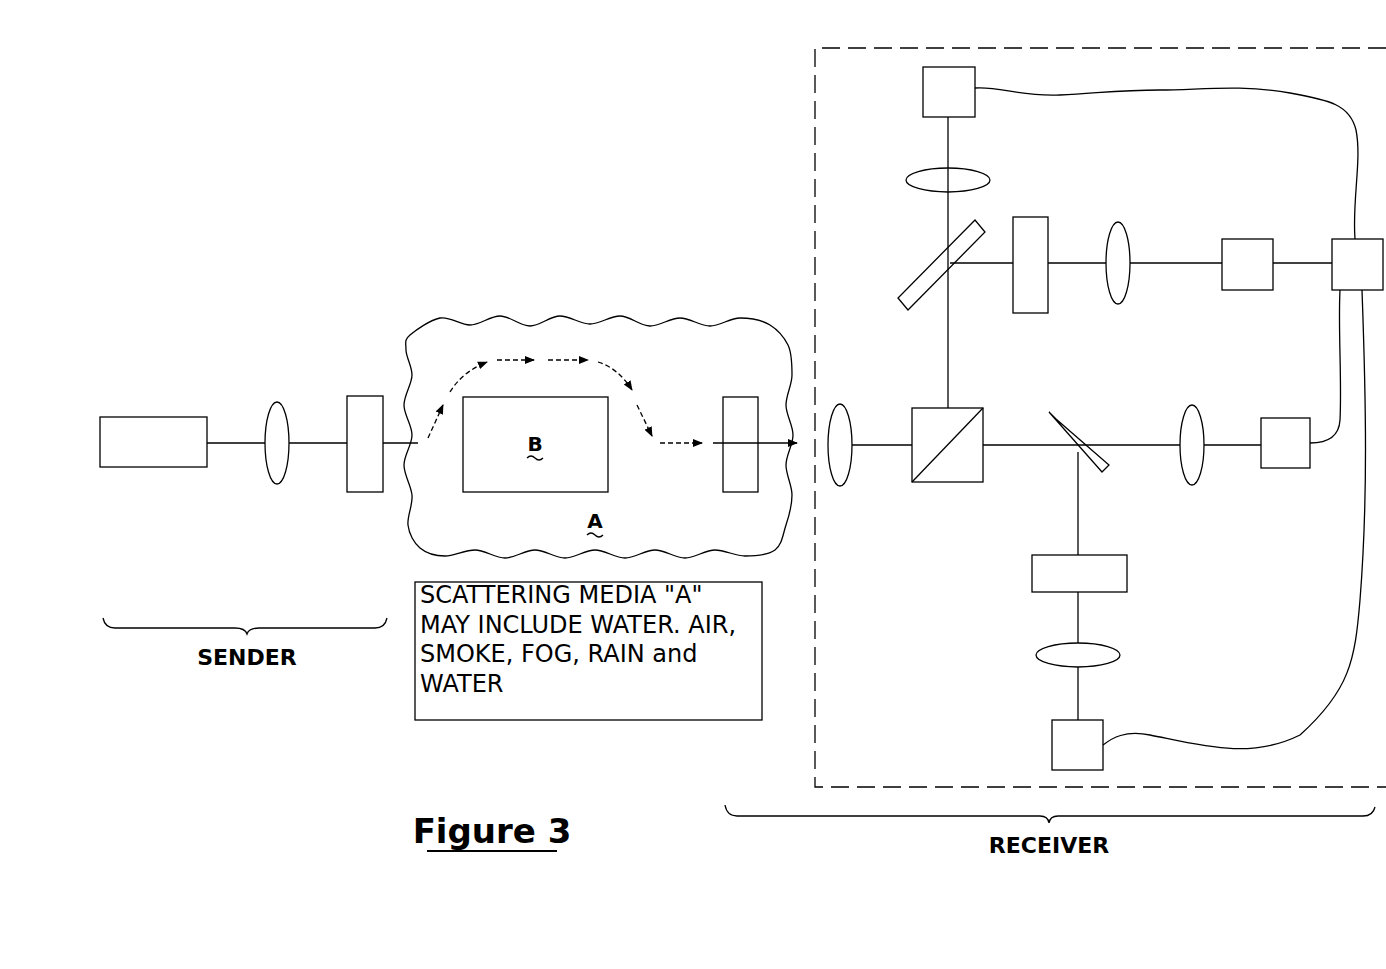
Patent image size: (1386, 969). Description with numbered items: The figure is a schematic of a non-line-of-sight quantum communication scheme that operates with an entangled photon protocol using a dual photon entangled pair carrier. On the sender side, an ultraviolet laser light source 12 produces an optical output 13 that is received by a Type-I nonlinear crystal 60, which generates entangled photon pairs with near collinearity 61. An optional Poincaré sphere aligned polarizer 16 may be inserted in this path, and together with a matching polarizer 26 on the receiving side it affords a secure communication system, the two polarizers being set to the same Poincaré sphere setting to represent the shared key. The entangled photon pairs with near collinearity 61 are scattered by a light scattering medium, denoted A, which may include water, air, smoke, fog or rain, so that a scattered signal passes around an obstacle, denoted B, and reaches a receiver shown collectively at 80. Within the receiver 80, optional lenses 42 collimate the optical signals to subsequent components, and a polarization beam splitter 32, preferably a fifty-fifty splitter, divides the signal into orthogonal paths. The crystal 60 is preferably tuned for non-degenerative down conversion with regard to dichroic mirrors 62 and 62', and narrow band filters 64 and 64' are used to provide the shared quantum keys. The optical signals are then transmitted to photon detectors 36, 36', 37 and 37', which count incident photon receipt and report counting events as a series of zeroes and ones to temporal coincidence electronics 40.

The light source 12 is at (144, 457).
The optical output 13 is at (237, 441).
The Type-I nonlinear crystal 60 is at (277, 402).
The entangled photon pairs with near collinearity 61 is at (318, 441).
The polarizer 16 is at (366, 396).
The polarizer 26 is at (740, 397).
The receiver 80 is at (815, 196).
The lenses 42 is at (840, 403).
The polarization beam splitter 32 is at (968, 408).
The dichroic mirror 62 is at (920, 245).
The dichroic mirror 62' is at (1115, 419).
The narrow band filter 64 is at (1033, 213).
The narrow band filter 64' is at (1025, 573).
The photon detector 36 is at (1247, 264).
The photon detector 36' is at (949, 92).
The photon detector 37 is at (1285, 443).
The photon detector 37' is at (1077, 745).
The temporal coincidence electronics 40 is at (1349, 280).